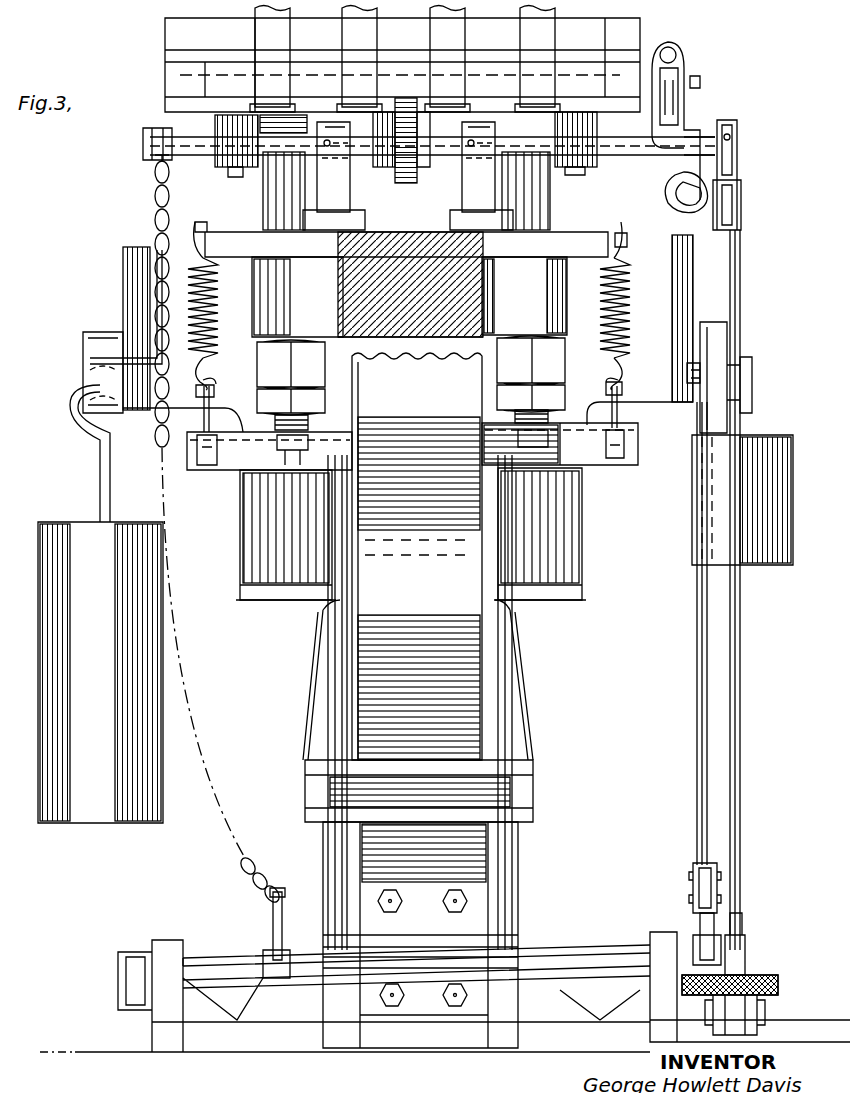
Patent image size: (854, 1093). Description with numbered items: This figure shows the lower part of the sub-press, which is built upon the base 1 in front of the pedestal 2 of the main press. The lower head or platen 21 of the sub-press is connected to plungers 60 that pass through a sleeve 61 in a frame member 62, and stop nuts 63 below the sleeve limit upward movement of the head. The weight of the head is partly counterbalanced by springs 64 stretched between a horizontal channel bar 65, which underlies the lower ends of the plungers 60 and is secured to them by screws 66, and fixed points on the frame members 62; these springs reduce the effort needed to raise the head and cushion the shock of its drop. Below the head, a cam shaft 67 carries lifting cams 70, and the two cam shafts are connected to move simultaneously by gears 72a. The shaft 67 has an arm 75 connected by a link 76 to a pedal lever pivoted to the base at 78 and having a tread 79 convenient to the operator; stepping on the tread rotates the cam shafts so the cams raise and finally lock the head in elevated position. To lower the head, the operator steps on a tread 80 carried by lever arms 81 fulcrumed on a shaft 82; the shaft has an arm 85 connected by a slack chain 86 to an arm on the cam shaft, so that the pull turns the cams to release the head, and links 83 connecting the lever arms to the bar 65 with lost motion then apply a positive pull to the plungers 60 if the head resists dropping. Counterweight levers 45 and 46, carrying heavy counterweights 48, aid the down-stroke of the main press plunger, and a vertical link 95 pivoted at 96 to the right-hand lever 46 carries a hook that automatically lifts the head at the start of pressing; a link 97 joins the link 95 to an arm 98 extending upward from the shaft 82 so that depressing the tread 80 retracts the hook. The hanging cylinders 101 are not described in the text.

The base 1 is at (287, 1042).
The pedestal 2 is at (318, 707).
The lower head or platen 21 is at (417, 556).
The lever 45 is at (96, 392).
The lever 46 is at (716, 350).
The counterweight 48 is at (100, 672).
The plunger 60 is at (548, 202).
The sleeve 61 is at (552, 300).
The frame member 62 is at (388, 286).
The stop nut 63 is at (553, 362).
The spring 64 is at (214, 300).
The horizontal channel bar 65 is at (630, 465).
The screw 66 is at (277, 445).
The cam shaft 67 is at (186, 152).
The lifting cam 70 is at (408, 176).
The gear 72a is at (404, 183).
The arm 75 is at (737, 170).
The link 76 is at (742, 691).
The pivot 78 is at (612, 965).
The tread 79 is at (770, 977).
The tread 80 is at (435, 758).
The lever arm 81 is at (530, 825).
The shaft 82 is at (587, 948).
The link 83 is at (500, 620).
The arm 85 is at (272, 918).
The chain 86 is at (258, 866).
The link 95 is at (698, 822).
The pivot 96 is at (688, 395).
The link 97 is at (700, 873).
The arm 98 is at (703, 928).
The cylinder block 101 is at (402, 59).